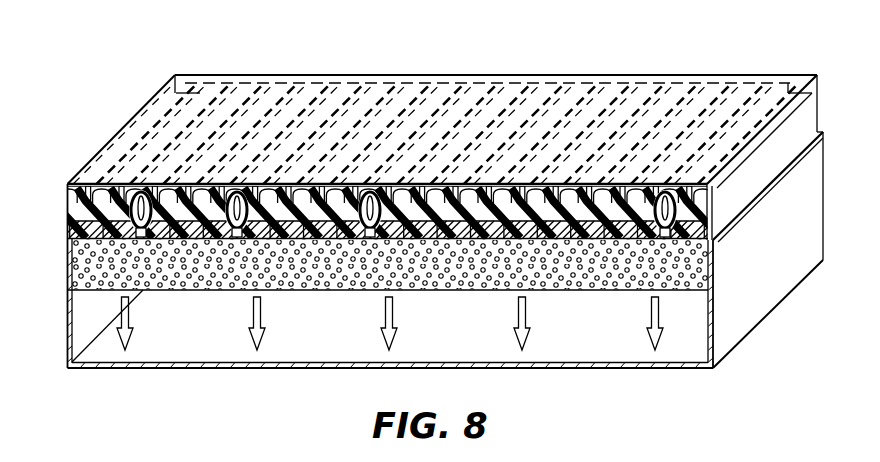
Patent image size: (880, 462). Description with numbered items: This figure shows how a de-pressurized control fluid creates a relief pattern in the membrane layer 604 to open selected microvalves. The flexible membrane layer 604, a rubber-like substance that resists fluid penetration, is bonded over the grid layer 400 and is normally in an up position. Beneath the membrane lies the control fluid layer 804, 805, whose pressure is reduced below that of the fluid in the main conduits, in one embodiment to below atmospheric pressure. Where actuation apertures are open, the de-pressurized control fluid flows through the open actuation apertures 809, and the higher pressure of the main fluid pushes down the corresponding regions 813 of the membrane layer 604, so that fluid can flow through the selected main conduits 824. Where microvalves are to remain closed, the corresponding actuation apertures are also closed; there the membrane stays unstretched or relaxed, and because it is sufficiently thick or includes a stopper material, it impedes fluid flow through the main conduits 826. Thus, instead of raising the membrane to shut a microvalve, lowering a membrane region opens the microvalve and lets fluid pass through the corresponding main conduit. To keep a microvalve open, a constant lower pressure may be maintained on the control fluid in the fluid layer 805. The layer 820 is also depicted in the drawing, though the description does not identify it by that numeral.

The grid layer 400 is at (58, 228).
The membrane layer 604 is at (737, 183).
The control fluid layer 804 is at (340, 350).
The control fluid layer 805 is at (413, 291).
The open actuation apertures 809 is at (238, 240).
The membrane layer regions 813 is at (239, 198).
The rail channel layer 820 is at (461, 183).
The main conduits 824 is at (465, 98).
The main conduits 826 is at (558, 97).